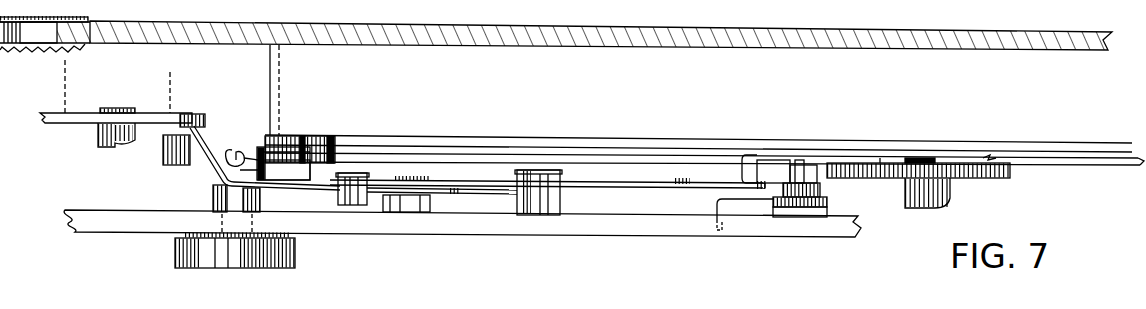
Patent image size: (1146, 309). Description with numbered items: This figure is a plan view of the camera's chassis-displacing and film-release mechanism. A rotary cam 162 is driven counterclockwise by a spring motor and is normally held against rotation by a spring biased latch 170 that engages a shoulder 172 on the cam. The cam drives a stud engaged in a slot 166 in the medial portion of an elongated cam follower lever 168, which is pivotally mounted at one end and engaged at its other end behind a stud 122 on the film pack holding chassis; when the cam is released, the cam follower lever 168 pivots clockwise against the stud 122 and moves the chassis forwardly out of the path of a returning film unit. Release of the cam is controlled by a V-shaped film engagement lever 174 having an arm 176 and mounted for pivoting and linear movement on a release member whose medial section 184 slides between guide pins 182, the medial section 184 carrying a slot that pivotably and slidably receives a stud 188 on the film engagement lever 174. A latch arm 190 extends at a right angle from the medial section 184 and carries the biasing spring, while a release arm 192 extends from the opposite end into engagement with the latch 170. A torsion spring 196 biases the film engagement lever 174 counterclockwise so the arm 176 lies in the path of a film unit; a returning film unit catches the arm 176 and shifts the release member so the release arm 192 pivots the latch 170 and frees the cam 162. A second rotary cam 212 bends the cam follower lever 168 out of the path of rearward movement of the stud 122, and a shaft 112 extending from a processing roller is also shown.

The shaft 112 is at (110, 144).
The stud 122 is at (322, 137).
The rotary cam 162 is at (1008, 189).
The slot 166 is at (997, 155).
The cam follower lever 168 is at (657, 158).
The latch 170 is at (818, 173).
The shoulder 172 is at (887, 165).
The film engagement lever 174 is at (287, 200).
The arm 176 is at (213, 158).
The guide pins 182 is at (371, 205).
The medial section 184 is at (620, 185).
The stud 188 is at (403, 207).
The latch arm 190 is at (310, 170).
The release arm 192 is at (743, 165).
The torsion spring 196 is at (453, 200).
The rotary cam 212 is at (188, 160).